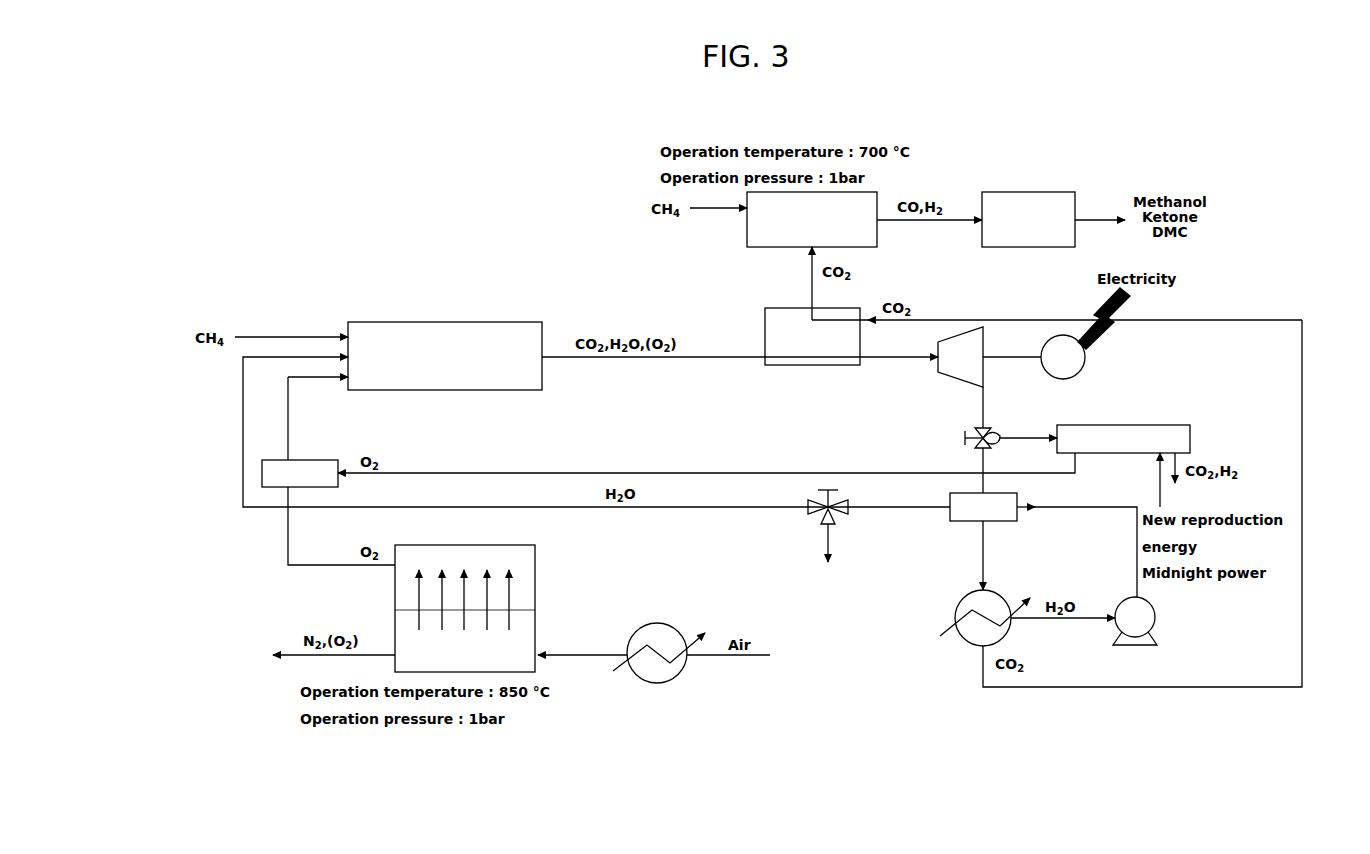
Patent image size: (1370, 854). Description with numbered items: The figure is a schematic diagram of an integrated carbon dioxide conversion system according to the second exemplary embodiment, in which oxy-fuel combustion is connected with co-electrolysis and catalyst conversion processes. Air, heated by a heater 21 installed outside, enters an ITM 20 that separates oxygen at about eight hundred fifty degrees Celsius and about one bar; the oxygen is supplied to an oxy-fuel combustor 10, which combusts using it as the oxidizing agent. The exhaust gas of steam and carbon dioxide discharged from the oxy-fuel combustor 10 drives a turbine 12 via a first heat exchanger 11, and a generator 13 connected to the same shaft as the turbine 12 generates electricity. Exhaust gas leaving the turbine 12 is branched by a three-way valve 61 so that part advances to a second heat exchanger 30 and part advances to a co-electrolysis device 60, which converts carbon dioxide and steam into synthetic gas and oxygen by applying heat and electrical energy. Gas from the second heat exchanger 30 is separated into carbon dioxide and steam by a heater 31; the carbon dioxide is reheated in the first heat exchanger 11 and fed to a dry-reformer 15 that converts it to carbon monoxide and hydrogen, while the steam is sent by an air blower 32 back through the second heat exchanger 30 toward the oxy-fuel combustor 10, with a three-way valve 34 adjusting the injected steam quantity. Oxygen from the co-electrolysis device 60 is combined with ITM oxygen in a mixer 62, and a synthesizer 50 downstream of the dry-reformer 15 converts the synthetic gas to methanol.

The oxy-fuel combustor 10 is at (445, 322).
The first heat exchanger 11 is at (803, 365).
The turbine 12 is at (953, 330).
The generator 13 is at (1087, 350).
The dry-reformer 15 is at (747, 232).
The ITM 20 is at (540, 556).
The heater 21 is at (660, 623).
The second heat exchanger 30 is at (1003, 522).
The heater 31 is at (958, 603).
The air blower 32 is at (1155, 622).
The 3-way valve 34 is at (815, 522).
The synthesizer 50 is at (1023, 192).
The co-electrolysis device 60 is at (1148, 425).
The 3-way valve 61 is at (972, 430).
The mixer 62 is at (315, 460).